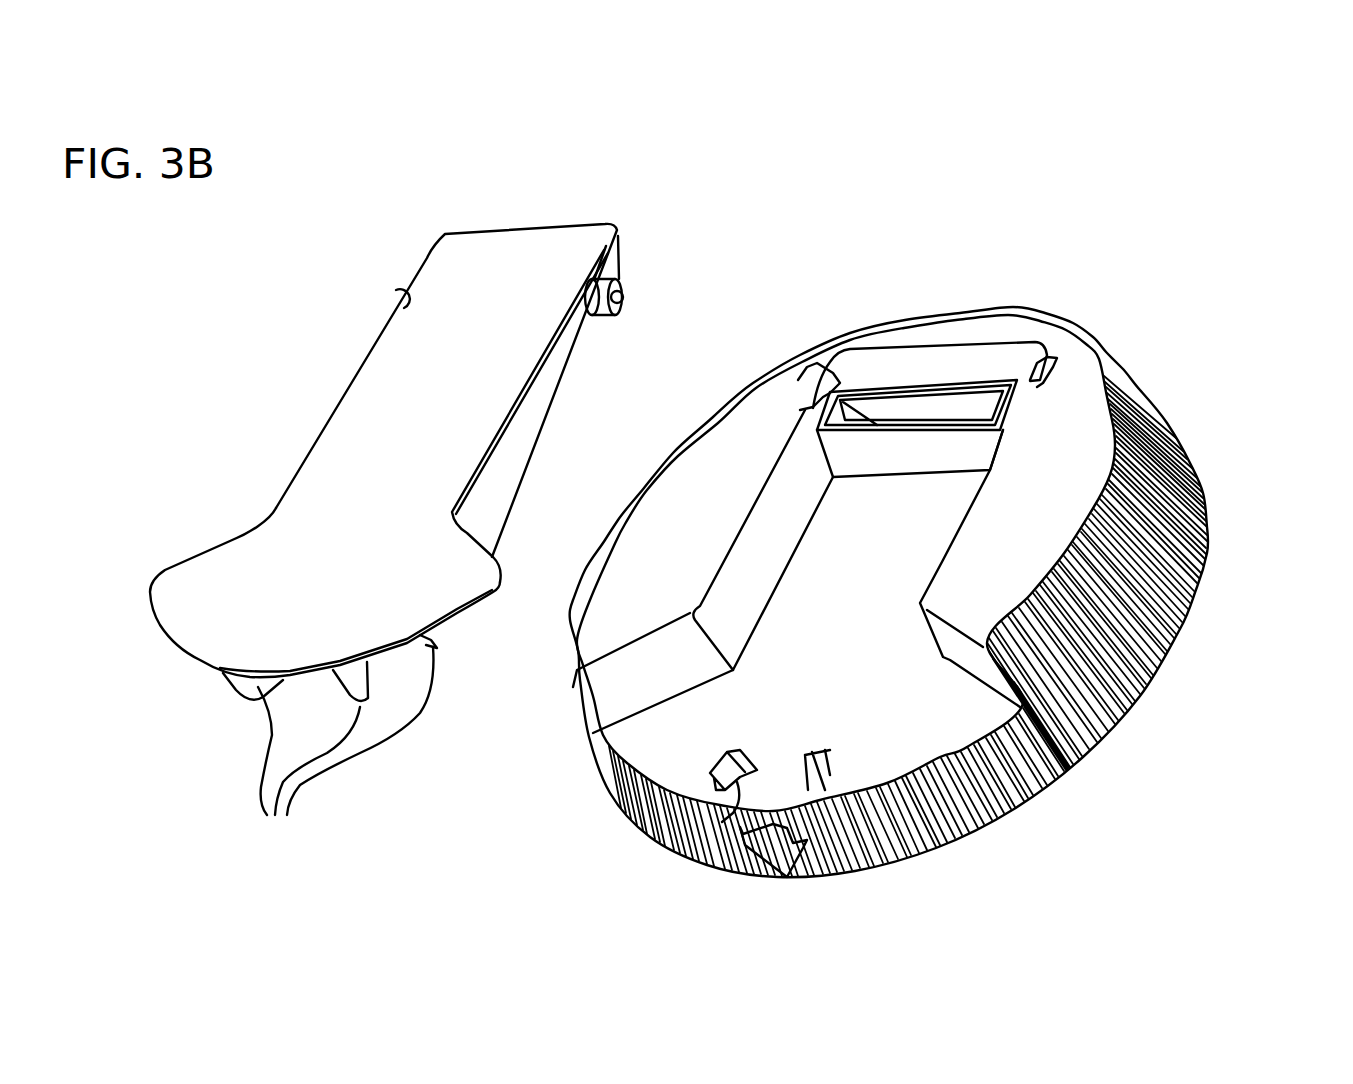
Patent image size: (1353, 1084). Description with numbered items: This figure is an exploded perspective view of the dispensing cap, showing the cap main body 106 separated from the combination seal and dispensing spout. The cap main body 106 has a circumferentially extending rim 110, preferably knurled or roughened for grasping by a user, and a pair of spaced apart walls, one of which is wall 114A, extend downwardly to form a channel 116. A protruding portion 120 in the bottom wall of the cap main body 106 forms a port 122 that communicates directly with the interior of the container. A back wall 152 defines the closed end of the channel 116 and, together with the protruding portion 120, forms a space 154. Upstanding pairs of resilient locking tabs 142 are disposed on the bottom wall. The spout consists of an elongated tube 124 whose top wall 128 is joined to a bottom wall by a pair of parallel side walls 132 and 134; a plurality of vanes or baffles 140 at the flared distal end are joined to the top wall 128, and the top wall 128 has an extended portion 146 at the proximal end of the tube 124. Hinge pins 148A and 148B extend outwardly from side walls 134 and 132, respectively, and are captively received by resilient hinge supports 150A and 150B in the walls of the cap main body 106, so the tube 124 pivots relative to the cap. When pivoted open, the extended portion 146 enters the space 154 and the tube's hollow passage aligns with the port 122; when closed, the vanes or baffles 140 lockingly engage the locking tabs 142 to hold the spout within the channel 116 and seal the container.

The cap main body 106 is at (1127, 457).
The rim 110 is at (1128, 642).
The wall 114A is at (770, 527).
The channel 116 is at (793, 707).
The protruding portion 120 is at (943, 453).
The port 122 is at (970, 410).
The tube 124 is at (373, 347).
The top wall 128 is at (403, 448).
The side wall 132 is at (278, 502).
The side wall 134 is at (530, 428).
The vanes or baffles 140 is at (330, 737).
The resilient locking tabs 142 is at (750, 837).
The extended portion 146 is at (613, 231).
The hinge pin 148A is at (627, 296).
The hinge pin 148B is at (397, 293).
The resilient hinge support 150A is at (1058, 382).
The resilient hinge support 150B is at (803, 375).
The back wall 152 is at (965, 368).
The space 154 is at (893, 372).